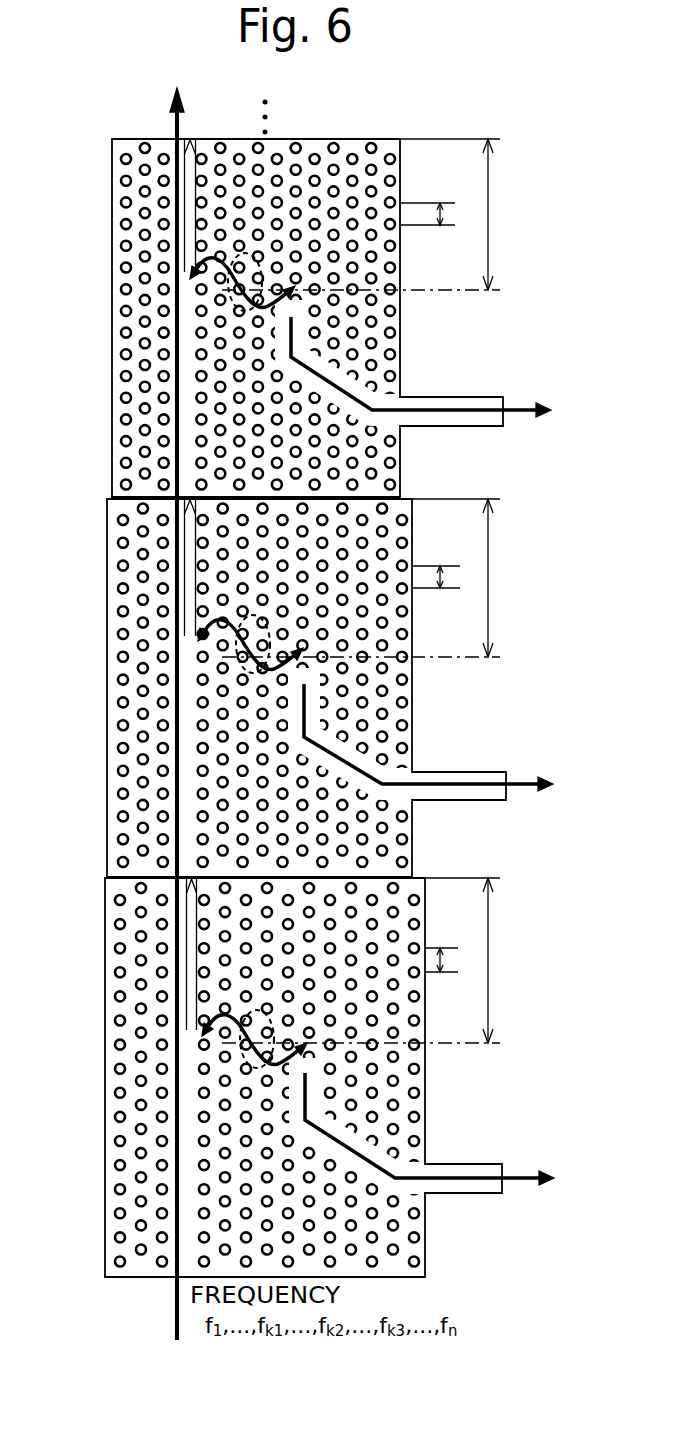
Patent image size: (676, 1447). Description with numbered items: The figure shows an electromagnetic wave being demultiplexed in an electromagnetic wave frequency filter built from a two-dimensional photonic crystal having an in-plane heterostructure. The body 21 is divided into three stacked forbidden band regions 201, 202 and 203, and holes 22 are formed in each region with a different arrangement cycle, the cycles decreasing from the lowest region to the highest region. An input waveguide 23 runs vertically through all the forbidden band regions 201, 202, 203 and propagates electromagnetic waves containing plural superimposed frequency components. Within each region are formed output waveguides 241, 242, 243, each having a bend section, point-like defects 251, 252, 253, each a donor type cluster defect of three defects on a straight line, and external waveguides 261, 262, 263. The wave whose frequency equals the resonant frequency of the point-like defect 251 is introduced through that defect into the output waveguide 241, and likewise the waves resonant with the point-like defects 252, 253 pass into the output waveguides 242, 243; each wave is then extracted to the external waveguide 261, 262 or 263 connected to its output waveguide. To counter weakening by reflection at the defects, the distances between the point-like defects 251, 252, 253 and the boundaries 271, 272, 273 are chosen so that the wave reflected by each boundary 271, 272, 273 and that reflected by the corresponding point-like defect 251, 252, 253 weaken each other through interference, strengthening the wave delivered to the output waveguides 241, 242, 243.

The body 21 is at (137, 1217).
The holes 22 is at (120, 1140).
The input waveguide 23 is at (180, 1080).
The forbidden band region 201 is at (444, 1129).
The forbidden band region 202 is at (442, 724).
The forbidden band region 203 is at (442, 354).
The output waveguide 241 is at (310, 1000).
The output waveguide 242 is at (300, 608).
The output waveguide 243 is at (293, 243).
The point-like defect 251 is at (247, 1028).
The point-like defect 252 is at (247, 640).
The point-like defect 253 is at (242, 278).
The external waveguide 261 is at (440, 1172).
The external waveguide 262 is at (442, 775).
The external waveguide 263 is at (442, 403).
The boundary 271 is at (186, 878).
The boundary 272 is at (186, 499).
The boundary 273 is at (186, 139).